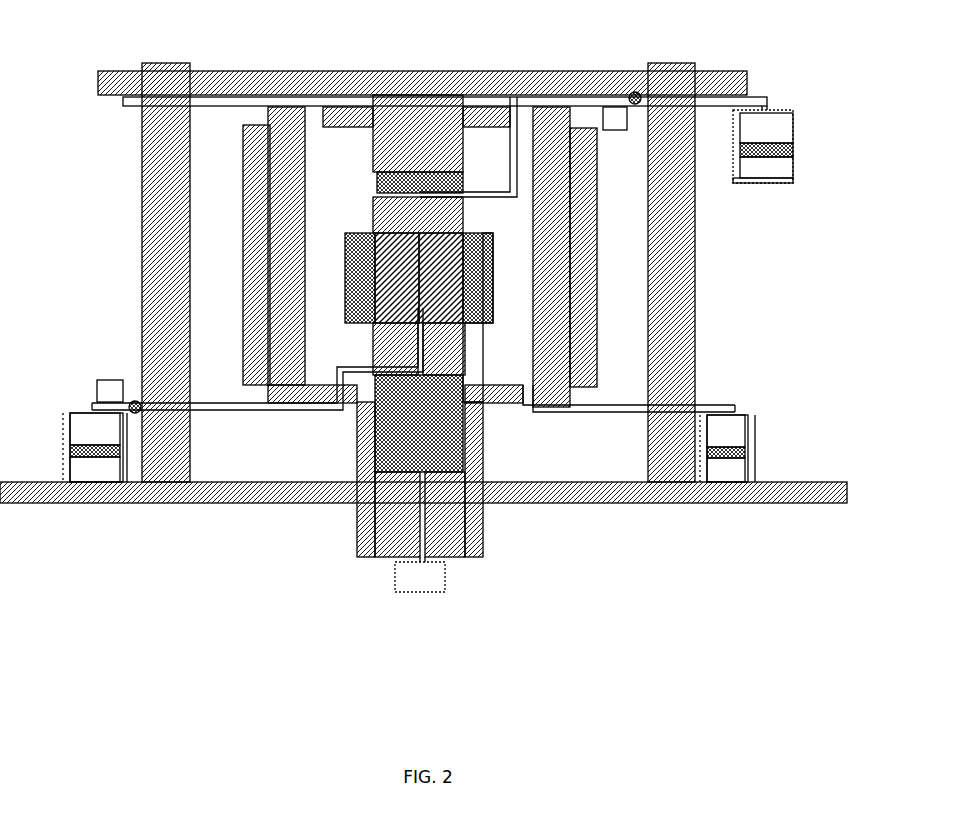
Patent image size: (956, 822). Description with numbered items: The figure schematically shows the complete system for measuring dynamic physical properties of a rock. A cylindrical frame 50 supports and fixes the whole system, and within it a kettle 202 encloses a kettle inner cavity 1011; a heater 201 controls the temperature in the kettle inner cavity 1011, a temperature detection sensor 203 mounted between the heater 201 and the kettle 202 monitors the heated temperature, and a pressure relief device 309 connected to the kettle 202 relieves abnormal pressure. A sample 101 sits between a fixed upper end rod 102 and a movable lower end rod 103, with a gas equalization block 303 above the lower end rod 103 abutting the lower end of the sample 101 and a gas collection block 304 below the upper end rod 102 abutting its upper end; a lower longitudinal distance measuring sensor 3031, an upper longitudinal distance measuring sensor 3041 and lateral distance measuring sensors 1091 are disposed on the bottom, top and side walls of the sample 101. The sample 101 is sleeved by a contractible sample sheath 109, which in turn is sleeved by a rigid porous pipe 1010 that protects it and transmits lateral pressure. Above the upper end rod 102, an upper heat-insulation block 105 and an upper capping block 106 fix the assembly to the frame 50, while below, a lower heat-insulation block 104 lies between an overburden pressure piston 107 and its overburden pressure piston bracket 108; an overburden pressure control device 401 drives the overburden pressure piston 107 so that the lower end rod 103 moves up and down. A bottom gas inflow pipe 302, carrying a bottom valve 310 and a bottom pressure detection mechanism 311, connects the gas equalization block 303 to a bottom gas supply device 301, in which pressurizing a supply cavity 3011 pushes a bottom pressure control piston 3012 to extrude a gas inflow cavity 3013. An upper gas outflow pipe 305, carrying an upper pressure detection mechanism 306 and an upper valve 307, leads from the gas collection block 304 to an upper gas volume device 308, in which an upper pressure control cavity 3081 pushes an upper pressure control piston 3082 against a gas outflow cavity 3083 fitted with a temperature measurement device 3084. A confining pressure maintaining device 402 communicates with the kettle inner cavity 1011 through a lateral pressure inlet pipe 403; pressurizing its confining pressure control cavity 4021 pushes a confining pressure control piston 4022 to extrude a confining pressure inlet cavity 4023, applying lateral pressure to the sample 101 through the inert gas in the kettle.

The frame 50 is at (253, 487).
The porous pipe 1010 is at (604, 68).
The kettle inner cavity 1011 is at (520, 295).
The pressure relief device 309 is at (123, 101).
The upper gas volume device 308 is at (797, 161).
The temperature measurement device 3084 is at (763, 125).
The gas outflow cavity 3083 is at (763, 150).
The upper pressure control piston 3082 is at (763, 162).
The upper pressure control cavity 3081 is at (762, 170).
The upper pressure detection mechanism 306 is at (613, 120).
The upper valve 307 is at (640, 98).
The heater 201 is at (340, 211).
The kettle 202 is at (283, 272).
The temperature detection sensor 203 is at (268, 332).
The lower end rod 103 is at (343, 272).
The sample sheath 109 is at (370, 268).
The upper end rod 102 is at (372, 222).
The upper capping block 106 is at (390, 138).
The sample 101 is at (408, 270).
The upper gas outflow pipe 305 is at (492, 280).
The lower longitudinal distance measuring sensor 3031 is at (400, 297).
The gas equalization block 303 is at (404, 300).
The gas collection block 304 is at (418, 306).
The upper longitudinal distance measuring sensor 3041 is at (413, 303).
The lateral distance measuring sensor 1091 is at (378, 325).
The overburden pressure piston 107 is at (443, 440).
The overburden pressure piston bracket 108 is at (370, 547).
The lower heat-insulation block 104 is at (470, 327).
The upper heat-insulation block 105 is at (487, 327).
The overburden pressure control device 401 is at (422, 577).
The bottom gas inflow pipe 302 is at (213, 405).
The lateral pressure inlet pipe 403 is at (627, 407).
The bottom valve 310 is at (135, 401).
The bottom pressure detection mechanism 311 is at (100, 380).
The bottom gas supply device 301 is at (64, 401).
The gas inflow cavity 3013 is at (97, 433).
The bottom pressure control piston 3012 is at (97, 432).
The supply cavity 3011 is at (88, 470).
The confining pressure maintaining device 402 is at (773, 422).
The confining pressure inlet cavity 4023 is at (730, 432).
The confining pressure control piston 4022 is at (730, 447).
The confining pressure control cavity 4021 is at (728, 472).